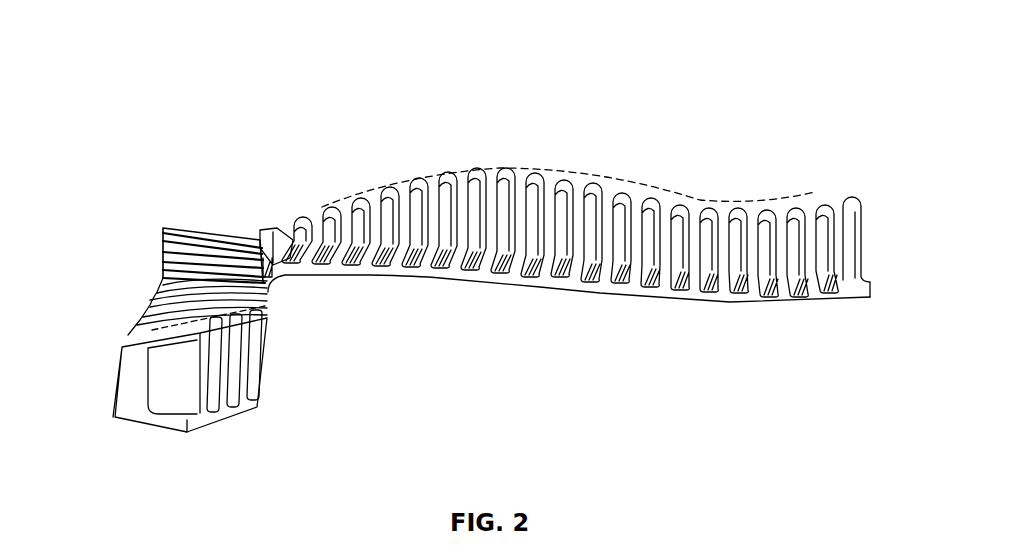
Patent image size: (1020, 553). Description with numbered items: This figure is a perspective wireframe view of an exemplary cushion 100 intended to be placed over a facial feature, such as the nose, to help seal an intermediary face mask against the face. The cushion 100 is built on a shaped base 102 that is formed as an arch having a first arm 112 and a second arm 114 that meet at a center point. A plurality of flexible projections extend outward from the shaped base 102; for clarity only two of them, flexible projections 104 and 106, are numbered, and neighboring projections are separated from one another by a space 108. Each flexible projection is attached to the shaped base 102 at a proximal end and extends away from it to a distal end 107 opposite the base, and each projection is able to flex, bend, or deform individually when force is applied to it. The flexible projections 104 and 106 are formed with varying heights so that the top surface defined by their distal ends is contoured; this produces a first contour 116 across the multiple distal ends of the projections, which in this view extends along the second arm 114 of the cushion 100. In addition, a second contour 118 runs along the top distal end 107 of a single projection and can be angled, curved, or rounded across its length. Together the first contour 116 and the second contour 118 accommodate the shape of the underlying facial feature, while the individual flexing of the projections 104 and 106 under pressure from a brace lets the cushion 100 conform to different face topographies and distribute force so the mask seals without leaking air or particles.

The cushion 100 is at (118, 58).
The shaped base 102 is at (472, 272).
The flexible projection 104 is at (573, 183).
The flexible projection 106 is at (650, 202).
The distal end 107 is at (273, 300).
The space 108 is at (562, 264).
The first arm 112 is at (168, 378).
The second arm 114 is at (807, 260).
The first contour 116 is at (722, 198).
The second contour 118 is at (173, 325).